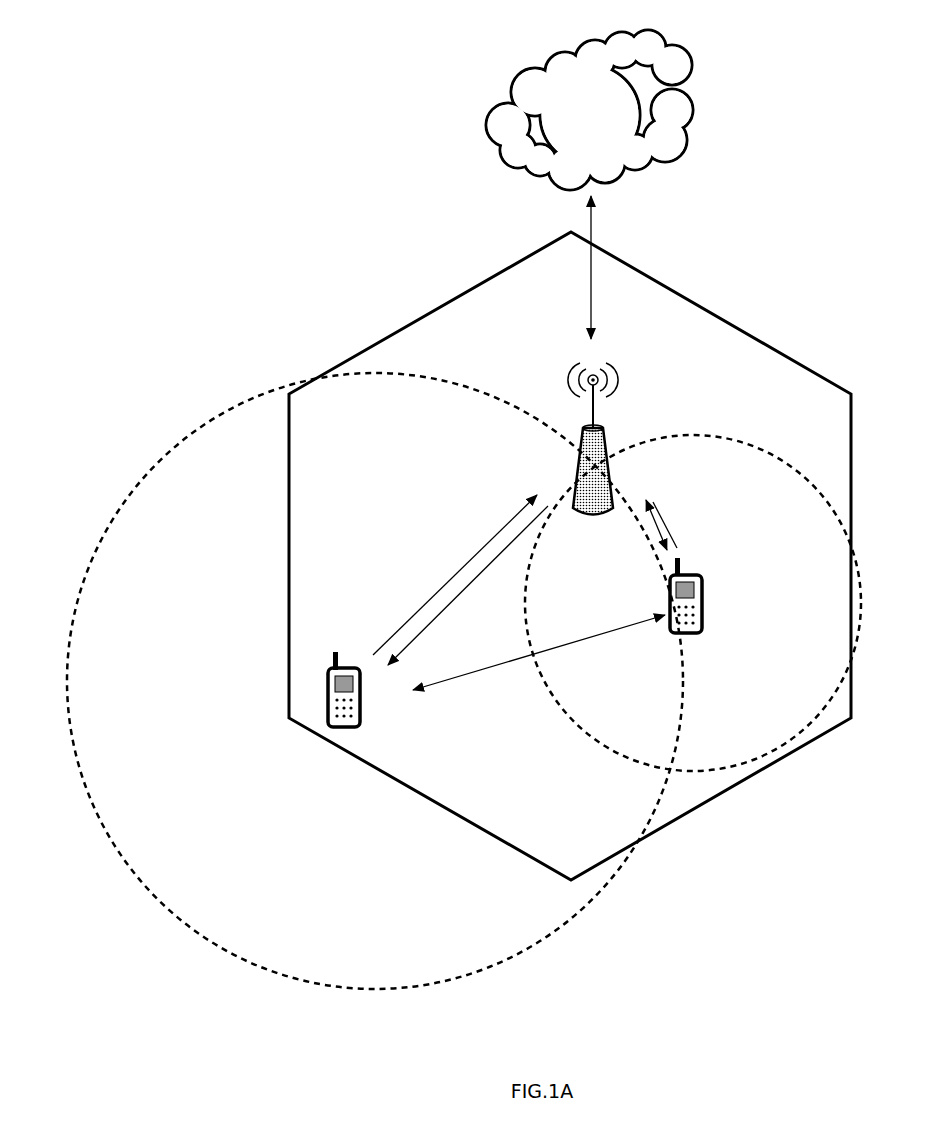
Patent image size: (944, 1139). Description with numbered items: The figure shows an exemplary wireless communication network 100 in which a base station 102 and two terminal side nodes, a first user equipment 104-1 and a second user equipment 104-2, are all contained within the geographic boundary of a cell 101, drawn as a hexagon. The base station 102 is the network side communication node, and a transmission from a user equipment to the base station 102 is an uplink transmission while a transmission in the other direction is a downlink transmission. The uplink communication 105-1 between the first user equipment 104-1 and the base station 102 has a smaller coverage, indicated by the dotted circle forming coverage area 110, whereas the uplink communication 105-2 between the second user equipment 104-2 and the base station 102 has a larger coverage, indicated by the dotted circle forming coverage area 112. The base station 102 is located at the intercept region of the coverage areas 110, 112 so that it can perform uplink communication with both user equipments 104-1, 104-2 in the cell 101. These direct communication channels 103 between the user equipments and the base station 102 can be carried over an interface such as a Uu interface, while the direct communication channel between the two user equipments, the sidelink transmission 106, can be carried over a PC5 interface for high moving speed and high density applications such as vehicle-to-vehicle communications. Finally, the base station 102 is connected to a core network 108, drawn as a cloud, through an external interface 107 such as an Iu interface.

The wireless communication network 100 is at (78, 74).
The cell 101 is at (465, 826).
The base station 102 is at (610, 418).
The direct communication channel 103 is at (637, 530).
The user equipment 104-1 is at (700, 577).
The user equipment 104-2 is at (343, 652).
The uplink communication 105-1 is at (678, 535).
The uplink communication 105-2 is at (443, 583).
The sidelink transmission 106 is at (462, 678).
The external interface 107 is at (596, 222).
The core network 108 is at (520, 97).
The coverage area 110 is at (806, 731).
The coverage area 112 is at (135, 485).